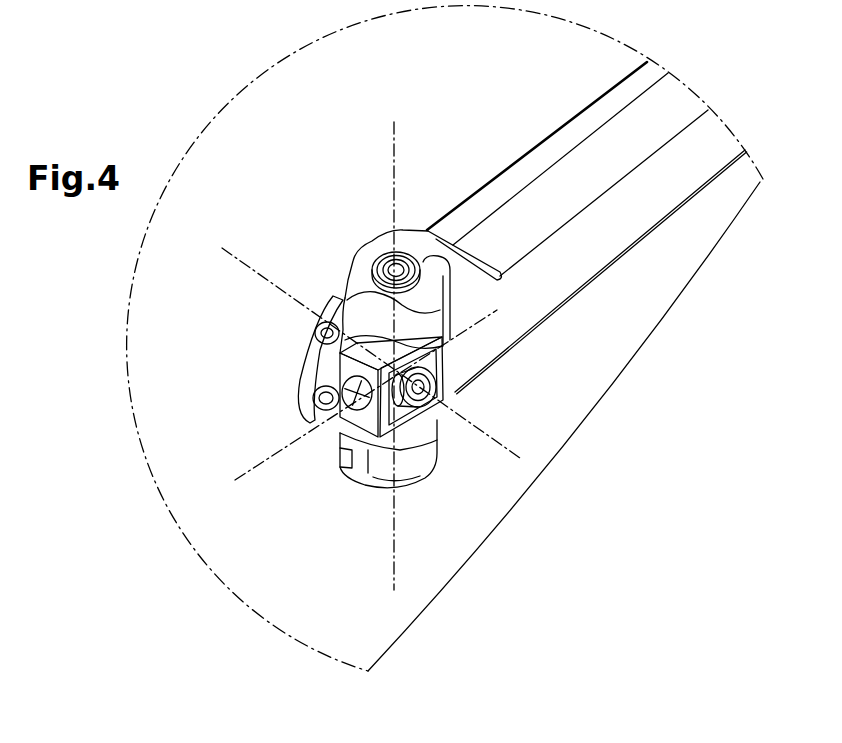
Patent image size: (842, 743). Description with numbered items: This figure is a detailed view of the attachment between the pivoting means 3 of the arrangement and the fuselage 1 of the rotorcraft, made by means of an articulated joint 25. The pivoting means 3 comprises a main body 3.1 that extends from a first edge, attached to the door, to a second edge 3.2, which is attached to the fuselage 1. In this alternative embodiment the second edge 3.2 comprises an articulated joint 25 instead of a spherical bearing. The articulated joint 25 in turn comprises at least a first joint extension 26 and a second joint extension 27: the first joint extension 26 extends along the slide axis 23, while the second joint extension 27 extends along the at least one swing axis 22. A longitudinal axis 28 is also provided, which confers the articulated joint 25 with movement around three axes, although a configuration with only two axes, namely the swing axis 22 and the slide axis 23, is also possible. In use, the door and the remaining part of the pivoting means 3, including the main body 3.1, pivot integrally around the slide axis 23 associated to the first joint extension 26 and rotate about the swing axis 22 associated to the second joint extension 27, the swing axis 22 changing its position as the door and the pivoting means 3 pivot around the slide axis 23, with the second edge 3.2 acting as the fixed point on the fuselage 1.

The fuselage 1 is at (253, 522).
The pivoting means 3 is at (656, 300).
The main body 3.1 is at (688, 157).
The second edge 3.2 is at (482, 334).
The swing axis 22 is at (396, 152).
The slide axis 23 is at (493, 442).
The articulated joint 25 is at (340, 259).
The first joint extension 26 is at (343, 372).
The second joint extension 27 is at (346, 480).
The longitudinal axis 28 is at (252, 470).